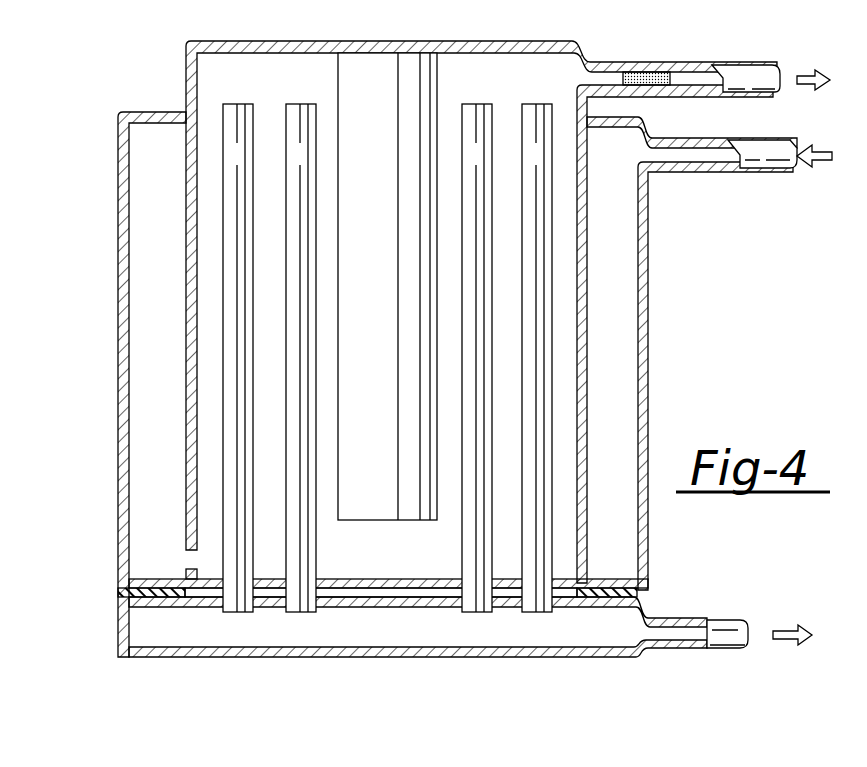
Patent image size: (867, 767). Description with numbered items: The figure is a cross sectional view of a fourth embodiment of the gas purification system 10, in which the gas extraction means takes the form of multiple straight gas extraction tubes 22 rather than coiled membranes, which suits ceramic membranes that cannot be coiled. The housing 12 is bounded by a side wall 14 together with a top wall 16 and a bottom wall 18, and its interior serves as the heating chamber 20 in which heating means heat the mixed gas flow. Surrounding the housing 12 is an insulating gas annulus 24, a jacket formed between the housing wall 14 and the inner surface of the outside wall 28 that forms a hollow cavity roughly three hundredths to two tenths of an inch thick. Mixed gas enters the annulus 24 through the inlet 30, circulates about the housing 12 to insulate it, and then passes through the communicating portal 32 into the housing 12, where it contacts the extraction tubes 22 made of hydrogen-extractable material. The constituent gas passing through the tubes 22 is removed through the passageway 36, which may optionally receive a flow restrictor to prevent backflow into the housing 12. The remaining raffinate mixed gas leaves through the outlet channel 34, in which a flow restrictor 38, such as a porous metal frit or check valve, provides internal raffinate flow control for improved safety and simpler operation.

The gas purification system 10 is at (662, 373).
The housing 12 is at (183, 473).
The side wall 14 is at (187, 386).
The top wall 16 is at (572, 47).
The bottom wall 18 is at (408, 549).
The heating chamber 20 is at (438, 85).
The gas extraction membrane 22 is at (286, 138).
The insulating gas annulus 24 is at (172, 263).
The outside wall 28 is at (118, 162).
The inlet 30 is at (708, 172).
The communicating portal 32 is at (193, 560).
The outlet channel 34 is at (814, 34).
The passageway 36 is at (690, 620).
The flow restrictor 38 is at (718, 34).